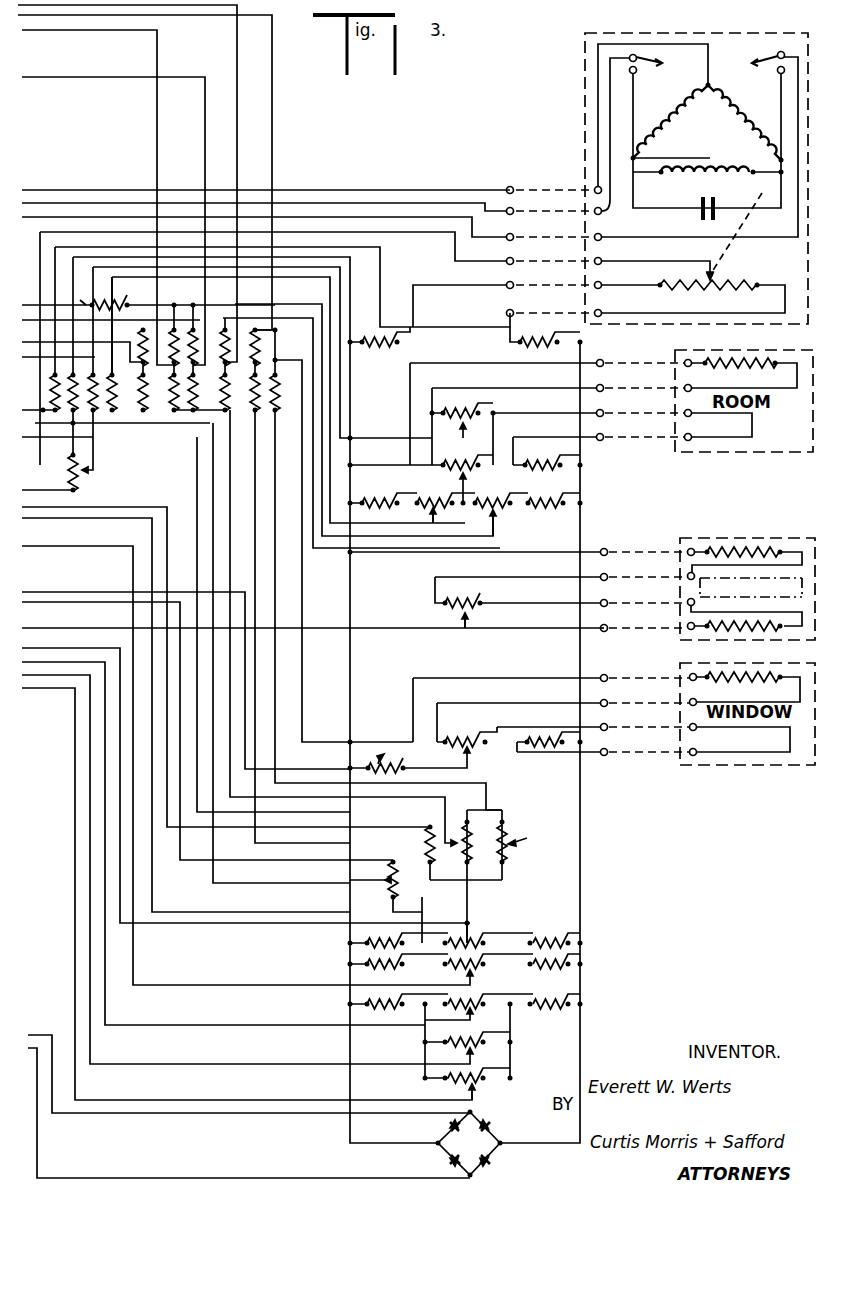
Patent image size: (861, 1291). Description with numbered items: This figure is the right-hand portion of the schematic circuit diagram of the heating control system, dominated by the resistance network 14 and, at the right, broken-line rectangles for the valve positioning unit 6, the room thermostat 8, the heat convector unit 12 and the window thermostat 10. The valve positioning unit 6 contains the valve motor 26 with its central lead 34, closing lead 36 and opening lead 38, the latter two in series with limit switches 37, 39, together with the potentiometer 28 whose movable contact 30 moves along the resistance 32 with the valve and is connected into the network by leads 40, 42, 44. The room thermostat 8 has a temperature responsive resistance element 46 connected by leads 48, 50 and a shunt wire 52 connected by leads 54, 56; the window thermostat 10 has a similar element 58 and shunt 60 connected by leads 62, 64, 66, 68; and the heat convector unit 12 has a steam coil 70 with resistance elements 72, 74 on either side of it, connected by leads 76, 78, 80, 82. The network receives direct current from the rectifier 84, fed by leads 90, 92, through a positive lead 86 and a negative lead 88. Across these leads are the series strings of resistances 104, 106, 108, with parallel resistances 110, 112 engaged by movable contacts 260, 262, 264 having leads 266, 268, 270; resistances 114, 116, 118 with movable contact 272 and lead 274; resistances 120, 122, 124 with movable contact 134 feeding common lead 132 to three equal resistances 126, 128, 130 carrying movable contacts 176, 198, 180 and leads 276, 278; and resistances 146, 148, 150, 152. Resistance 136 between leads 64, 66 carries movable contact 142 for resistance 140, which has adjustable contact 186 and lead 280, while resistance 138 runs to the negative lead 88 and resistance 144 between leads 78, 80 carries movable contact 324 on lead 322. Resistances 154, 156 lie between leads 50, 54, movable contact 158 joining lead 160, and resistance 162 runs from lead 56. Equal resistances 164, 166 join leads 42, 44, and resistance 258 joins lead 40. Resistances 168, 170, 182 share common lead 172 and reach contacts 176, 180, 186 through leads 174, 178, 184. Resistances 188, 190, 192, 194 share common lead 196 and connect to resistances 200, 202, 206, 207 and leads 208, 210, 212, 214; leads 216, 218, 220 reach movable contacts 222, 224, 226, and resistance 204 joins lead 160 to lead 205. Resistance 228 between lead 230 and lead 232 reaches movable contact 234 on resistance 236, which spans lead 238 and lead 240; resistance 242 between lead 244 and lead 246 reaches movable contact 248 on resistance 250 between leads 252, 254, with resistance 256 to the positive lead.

The valve positioning unit 6 is at (581, 69).
The room thermostat 8 is at (692, 459).
The window thermostat 10 is at (720, 774).
The heat convector unit 12 is at (695, 532).
The resistance network 14 is at (381, 172).
The valve motor 26 is at (737, 165).
The potentiometer 28 is at (736, 266).
The movable contact 30 is at (712, 280).
The resistance 32 is at (740, 288).
The central lead 34 is at (30, 188).
The lead 36 is at (46, 202).
The limit switch 37 is at (640, 70).
The lead 38 is at (34, 218).
The limit switch 39 is at (782, 70).
The lead 40 is at (492, 262).
The lead 42 is at (430, 285).
The lead 44 is at (616, 315).
The temperature responsive resistance element 46 is at (752, 362).
The lead 48 is at (525, 363).
The lead 50 is at (520, 388).
The shunt wire 52 is at (754, 418).
The lead 54 is at (522, 413).
The lead 56 is at (523, 437).
The temperature responsive resistance element 58 is at (725, 672).
The shunt 60 is at (782, 756).
The lead 62 is at (560, 678).
The lead 64 is at (560, 703).
The lead 66 is at (560, 727).
The lead 68 is at (580, 758).
The air heating steam coil 70 is at (700, 588).
The temperature responsive resistance element 72 is at (756, 634).
The temperature responsive resistance element 74 is at (752, 550).
The lead 76 is at (590, 630).
The lead 78 is at (572, 588).
The lead 80 is at (572, 563).
The lead 82 is at (572, 538).
The rectifier 84 is at (507, 1156).
The positive lead 86 is at (90, 258).
The negative lead 88 is at (66, 250).
The lead 90 is at (38, 1128).
The lead 92 is at (30, 1033).
The resistance 104 is at (383, 1008).
The resistance 106 is at (478, 1008).
The resistance 108 is at (545, 1008).
The resistance 110 is at (480, 1046).
The resistance 112 is at (485, 1082).
The resistance 114 is at (385, 968).
The resistance 116 is at (478, 968).
The resistance 118 is at (545, 968).
The resistance 120 is at (388, 947).
The resistance 122 is at (480, 947).
The resistance 124 is at (542, 940).
The resistance 126 is at (425, 838).
The resistance 128 is at (464, 815).
The resistance 130 is at (532, 831).
The common lead 132 is at (30, 650).
The movable contact 134 is at (472, 938).
The resistance 136 is at (468, 736).
The resistance 138 is at (540, 752).
The resistance 140 is at (390, 774).
The movable contact 142 is at (462, 752).
The resistance 144 is at (470, 600).
The resistance 146 is at (383, 498).
The resistance 148 is at (427, 498).
The resistance 150 is at (486, 498).
The resistance 152 is at (533, 498).
The resistance 154 is at (460, 462).
The resistance 156 is at (463, 410).
The movable contact 158 is at (458, 478).
The lead 160 is at (286, 308).
The resistance 162 is at (541, 464).
The resistance 164 is at (383, 348).
The resistance 166 is at (516, 342).
The resistance 168 is at (255, 406).
The resistance 170 is at (276, 404).
The common lead 172 is at (167, 16).
The lead 174 is at (255, 492).
The movable contact 176 is at (410, 883).
The lead 178 is at (276, 492).
The movable contact 180 is at (498, 851).
The resistance 182 is at (262, 342).
The lead 184 is at (277, 360).
The adjustable contact 186 is at (382, 754).
The resistance 188 is at (143, 392).
The resistance 190 is at (174, 392).
The resistance 192 is at (193, 392).
The resistance 194 is at (225, 398).
The common lead 196 is at (230, 472).
The movable contact 198 is at (456, 851).
The resistance 200 is at (143, 345).
The resistance 202 is at (186, 304).
The resistance 204 is at (103, 304).
The lead 205 is at (82, 298).
The resistance 206 is at (206, 304).
The resistance 207 is at (245, 300).
The lead 208 is at (30, 305).
The lead 210 is at (24, 31).
The lead 212 is at (24, 78).
The lead 214 is at (93, 6).
The lead 216 is at (155, 270).
The lead 218 is at (152, 278).
The lead 220 is at (282, 320).
The movable contact 222 is at (460, 428).
The movable contact 224 is at (430, 518).
The movable contact 226 is at (500, 518).
The resistance 228 is at (112, 384).
The lead 230 is at (30, 322).
The lead 232 is at (213, 468).
The movable contact 234 is at (384, 884).
The resistance 236 is at (397, 890).
The lead 238 is at (30, 520).
The lead 240 is at (30, 604).
The resistance 242 is at (93, 374).
The lead 244 is at (30, 358).
The lead 246 is at (95, 462).
The movable contact 248 is at (92, 478).
The resistance 250 is at (72, 482).
The lead 252 is at (33, 412).
The lead 254 is at (58, 490).
The resistance 256 is at (73, 350).
The resistance 258 is at (55, 390).
The movable contact 260 is at (466, 1018).
The movable contact 262 is at (466, 1056).
The movable contact 264 is at (466, 1090).
The lead 266 is at (30, 664).
The lead 268 is at (30, 677).
The lead 270 is at (30, 690).
The movable contact 272 is at (466, 978).
The lead 274 is at (30, 548).
The lead 276 is at (35, 507).
The lead 278 is at (30, 439).
The lead 280 is at (30, 592).
The lead 322 is at (30, 630).
The movable contact 324 is at (462, 632).